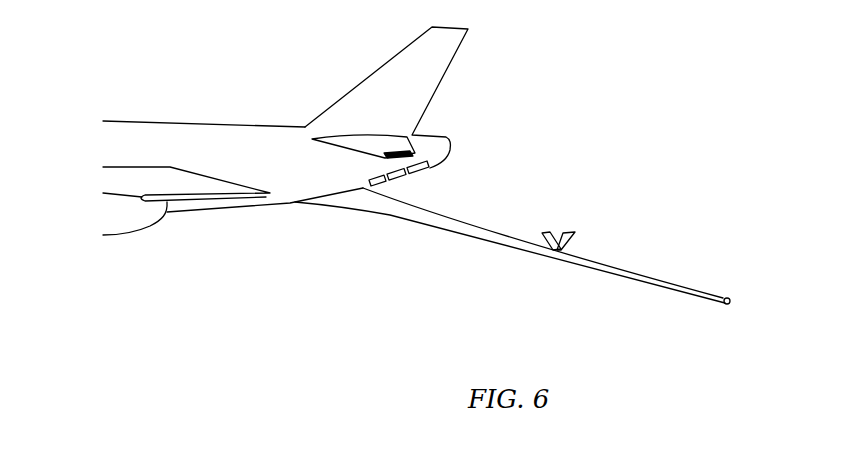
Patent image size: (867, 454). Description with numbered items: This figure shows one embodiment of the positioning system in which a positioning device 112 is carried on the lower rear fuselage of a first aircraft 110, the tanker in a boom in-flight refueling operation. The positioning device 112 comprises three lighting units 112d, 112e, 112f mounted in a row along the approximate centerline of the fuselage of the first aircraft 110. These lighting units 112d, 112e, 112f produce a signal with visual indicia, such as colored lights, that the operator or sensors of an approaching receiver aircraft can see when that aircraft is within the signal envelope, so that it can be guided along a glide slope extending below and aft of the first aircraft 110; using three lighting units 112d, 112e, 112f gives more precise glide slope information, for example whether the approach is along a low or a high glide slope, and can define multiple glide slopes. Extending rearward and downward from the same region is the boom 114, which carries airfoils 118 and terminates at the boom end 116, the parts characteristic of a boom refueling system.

The first aircraft 110 is at (179, 135).
The positioning device 112 is at (427, 154).
The lighting unit 112d is at (431, 169).
The lighting unit 112e is at (402, 176).
The lighting unit 112f is at (386, 185).
The boom 114 is at (473, 238).
The boom end 116 is at (734, 300).
The airfoils 118 is at (570, 225).